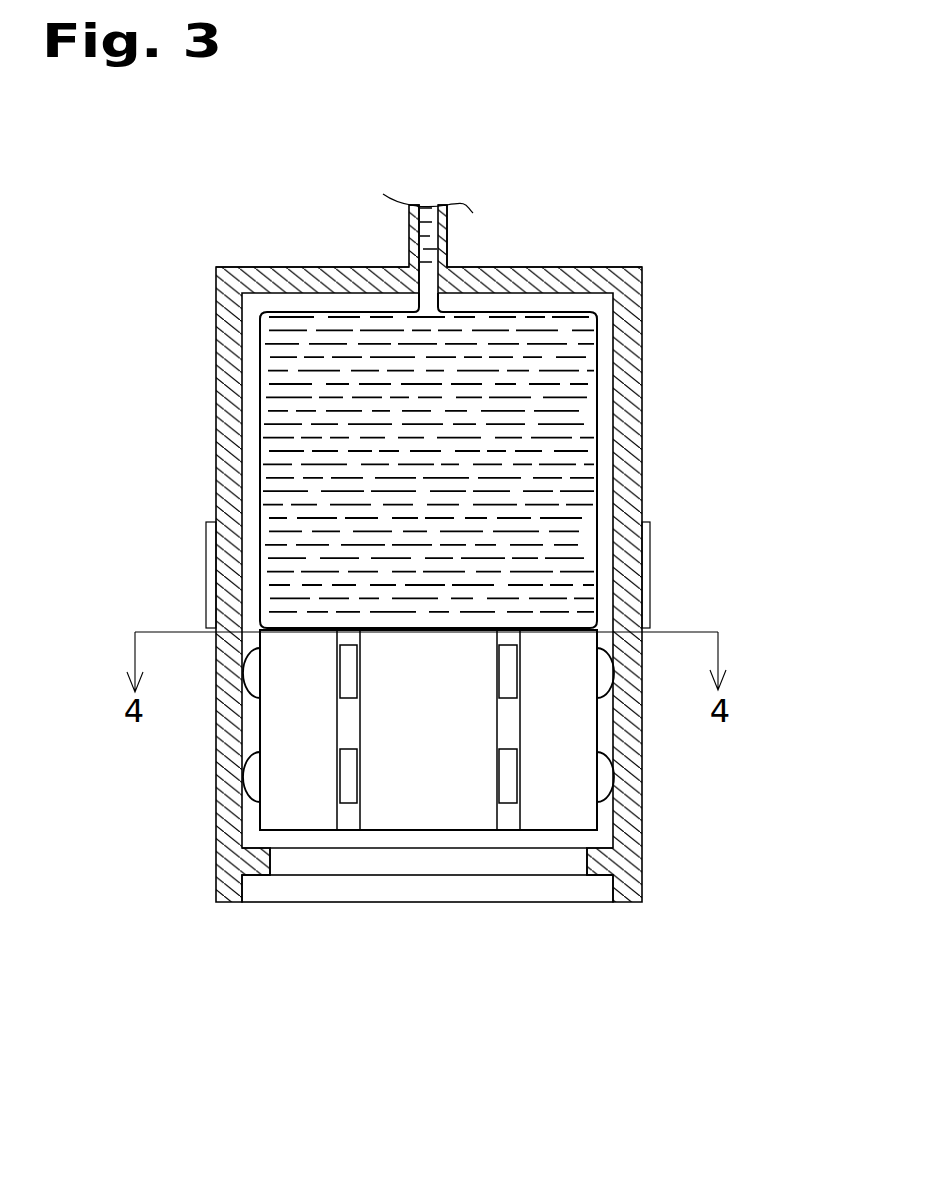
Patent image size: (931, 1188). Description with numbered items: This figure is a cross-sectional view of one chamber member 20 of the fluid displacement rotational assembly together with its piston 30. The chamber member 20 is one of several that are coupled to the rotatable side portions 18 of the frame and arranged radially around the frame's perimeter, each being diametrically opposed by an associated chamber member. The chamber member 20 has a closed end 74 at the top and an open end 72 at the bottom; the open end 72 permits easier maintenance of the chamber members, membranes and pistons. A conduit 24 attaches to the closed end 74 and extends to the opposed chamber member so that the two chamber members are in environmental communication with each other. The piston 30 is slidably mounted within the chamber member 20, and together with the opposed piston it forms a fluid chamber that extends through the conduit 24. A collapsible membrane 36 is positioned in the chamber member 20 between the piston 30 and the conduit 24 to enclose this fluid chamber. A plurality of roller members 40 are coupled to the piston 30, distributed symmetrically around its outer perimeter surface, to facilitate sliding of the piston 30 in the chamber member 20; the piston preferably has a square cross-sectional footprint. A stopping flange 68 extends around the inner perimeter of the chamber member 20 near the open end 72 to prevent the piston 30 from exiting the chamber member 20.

The side portions 18 is at (207, 552).
The chamber member 20 is at (628, 418).
The conduit 24 is at (447, 248).
The piston 30 is at (433, 770).
The collapsible membrane 36 is at (600, 355).
The roller members 40 is at (348, 663).
The stopping flange 68 is at (273, 889).
The open end 72 is at (353, 903).
The closed end 74 is at (311, 266).